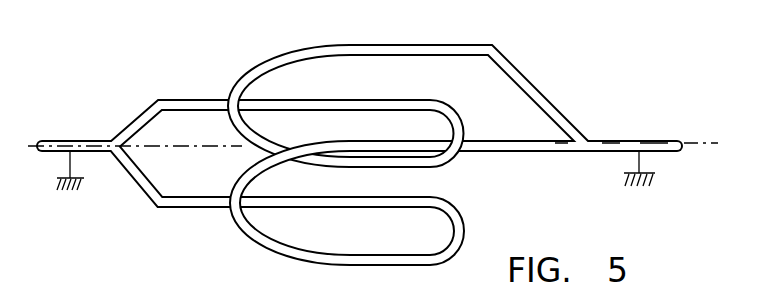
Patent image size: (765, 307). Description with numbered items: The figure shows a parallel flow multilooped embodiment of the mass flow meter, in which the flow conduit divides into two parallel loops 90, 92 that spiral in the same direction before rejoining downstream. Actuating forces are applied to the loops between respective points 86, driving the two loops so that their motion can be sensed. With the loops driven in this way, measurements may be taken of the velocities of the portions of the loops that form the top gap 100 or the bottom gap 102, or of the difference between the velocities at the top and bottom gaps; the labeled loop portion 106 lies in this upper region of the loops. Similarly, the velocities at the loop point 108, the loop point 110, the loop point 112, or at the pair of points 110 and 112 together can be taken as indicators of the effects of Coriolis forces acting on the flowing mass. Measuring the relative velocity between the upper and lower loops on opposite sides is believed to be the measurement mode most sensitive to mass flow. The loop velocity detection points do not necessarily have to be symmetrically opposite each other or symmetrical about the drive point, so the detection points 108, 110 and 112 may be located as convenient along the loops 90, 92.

The points 86 is at (335, 167).
The loop 90 is at (447, 103).
The loop 92 is at (435, 199).
The top gap 100 is at (395, 100).
The bottom gap 102 is at (393, 197).
The top fiber section 106 is at (421, 100).
The loop point 108 is at (363, 197).
The loop point 110 is at (214, 118).
The loop point 112 is at (468, 135).